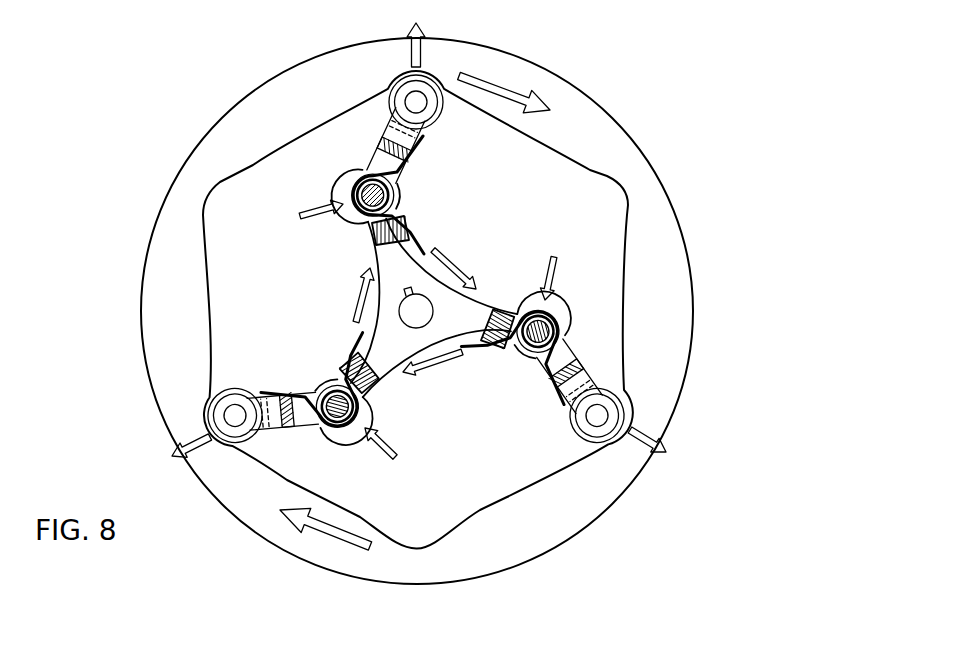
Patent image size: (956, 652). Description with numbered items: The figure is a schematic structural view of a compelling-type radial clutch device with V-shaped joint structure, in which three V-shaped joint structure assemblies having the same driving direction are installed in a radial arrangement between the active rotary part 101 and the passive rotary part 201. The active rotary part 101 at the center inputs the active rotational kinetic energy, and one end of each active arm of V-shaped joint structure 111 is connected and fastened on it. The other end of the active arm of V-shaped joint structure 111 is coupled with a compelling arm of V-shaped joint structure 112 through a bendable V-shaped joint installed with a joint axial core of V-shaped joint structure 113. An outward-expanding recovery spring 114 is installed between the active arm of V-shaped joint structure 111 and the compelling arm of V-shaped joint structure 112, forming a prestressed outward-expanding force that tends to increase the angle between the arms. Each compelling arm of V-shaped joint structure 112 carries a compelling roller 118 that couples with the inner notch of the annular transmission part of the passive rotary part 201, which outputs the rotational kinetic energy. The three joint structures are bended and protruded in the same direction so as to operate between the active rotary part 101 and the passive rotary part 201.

The passive rotary part 201 is at (487, 67).
The active rotary part 101 is at (417, 312).
The active arm of V-shaped joint structure 111 is at (397, 248).
The compelling arm of V-shaped joint structure 112 is at (392, 135).
The joint axial core of V-shaped joint structure 113 is at (367, 194).
The outward-expanding recovery spring 114 is at (413, 243).
The compelling roller 118 is at (440, 120).